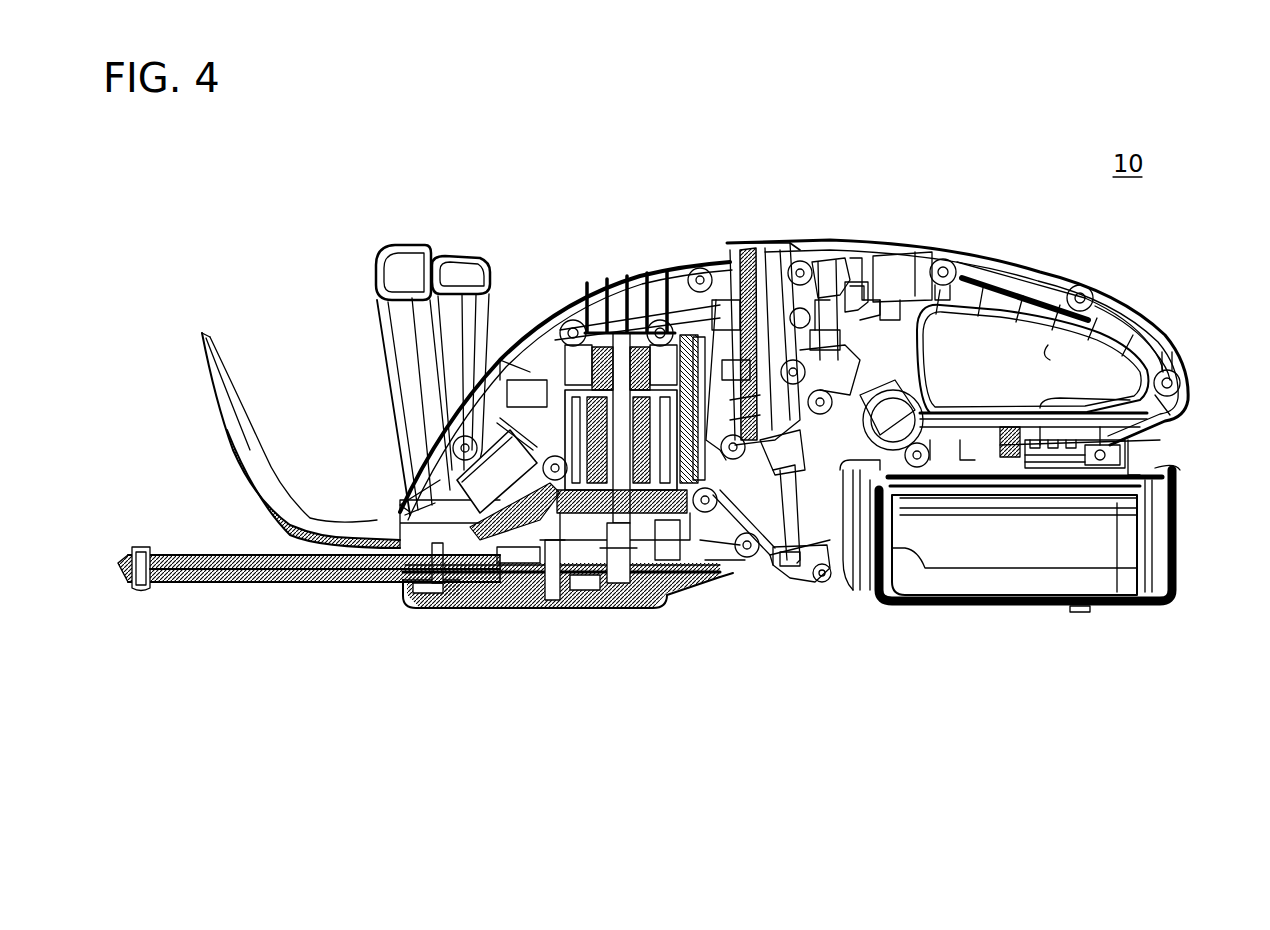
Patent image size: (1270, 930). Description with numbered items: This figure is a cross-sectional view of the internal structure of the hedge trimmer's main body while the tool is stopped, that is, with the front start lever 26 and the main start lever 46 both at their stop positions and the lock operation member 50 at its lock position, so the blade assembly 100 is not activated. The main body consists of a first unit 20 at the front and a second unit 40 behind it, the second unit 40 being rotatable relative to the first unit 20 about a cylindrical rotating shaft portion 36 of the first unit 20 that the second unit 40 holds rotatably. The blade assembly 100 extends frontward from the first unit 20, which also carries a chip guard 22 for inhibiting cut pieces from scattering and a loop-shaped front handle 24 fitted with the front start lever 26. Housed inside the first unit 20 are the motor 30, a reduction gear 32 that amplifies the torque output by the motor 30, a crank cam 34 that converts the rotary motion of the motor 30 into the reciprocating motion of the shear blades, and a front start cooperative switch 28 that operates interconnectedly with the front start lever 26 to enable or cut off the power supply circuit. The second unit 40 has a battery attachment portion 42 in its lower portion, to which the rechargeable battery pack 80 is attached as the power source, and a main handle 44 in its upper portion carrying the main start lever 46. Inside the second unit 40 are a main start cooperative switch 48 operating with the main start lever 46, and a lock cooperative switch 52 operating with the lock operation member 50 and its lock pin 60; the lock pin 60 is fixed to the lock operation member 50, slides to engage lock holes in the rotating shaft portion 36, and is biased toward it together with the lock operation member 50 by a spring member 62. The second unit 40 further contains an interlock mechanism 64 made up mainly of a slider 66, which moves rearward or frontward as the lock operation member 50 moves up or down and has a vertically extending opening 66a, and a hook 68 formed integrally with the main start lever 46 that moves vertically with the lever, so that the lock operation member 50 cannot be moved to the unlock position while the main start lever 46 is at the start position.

The first unit 20 is at (490, 612).
The chip guard 22 is at (205, 335).
The front handle 24 is at (410, 250).
The front start lever 26 is at (455, 258).
The front start cooperative switch 28 is at (418, 492).
The motor 30 is at (548, 375).
The reduction gear 32 is at (610, 605).
The crank cam 34 is at (520, 612).
The rotating shaft portion 36 is at (758, 570).
The second unit 40 is at (1186, 356).
The battery attachment portion 42 is at (1130, 448).
The main handle 44 is at (1130, 330).
The main start lever 46 is at (1050, 354).
The main start cooperative switch 48 is at (908, 266).
The lock operation member 50 is at (745, 308).
The lock cooperative switch 52 is at (840, 547).
The lock pin 60 is at (692, 330).
The spring member 62 is at (716, 340).
The interlock mechanism 64 is at (887, 152).
The slider 66 is at (836, 250).
The opening 66a is at (854, 300).
The hook 68 is at (862, 320).
The battery pack 80 is at (1045, 585).
The blade assembly 100 is at (165, 560).